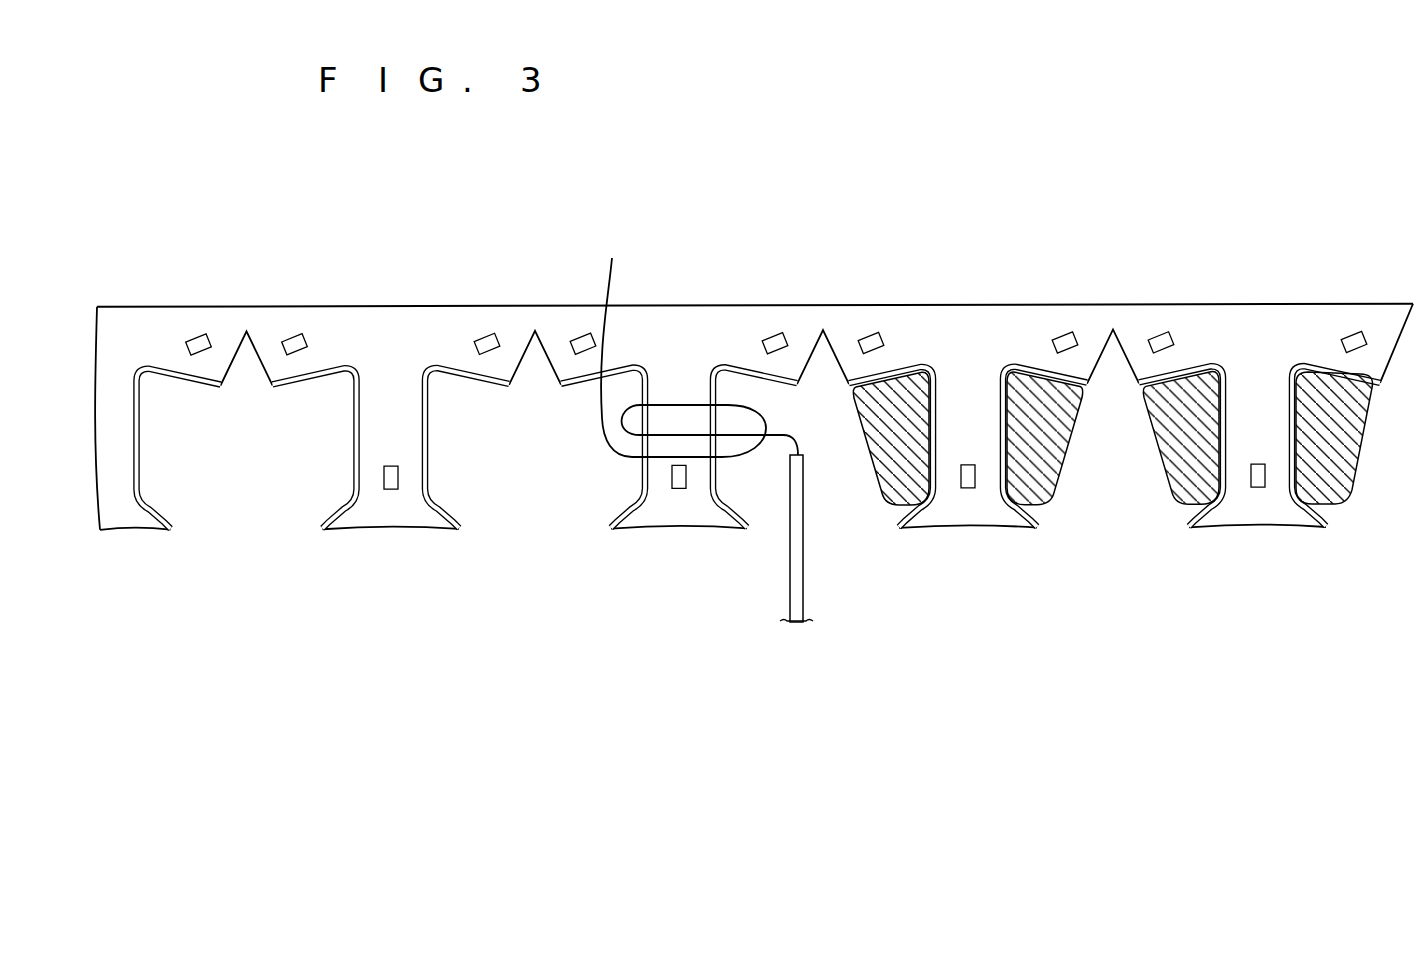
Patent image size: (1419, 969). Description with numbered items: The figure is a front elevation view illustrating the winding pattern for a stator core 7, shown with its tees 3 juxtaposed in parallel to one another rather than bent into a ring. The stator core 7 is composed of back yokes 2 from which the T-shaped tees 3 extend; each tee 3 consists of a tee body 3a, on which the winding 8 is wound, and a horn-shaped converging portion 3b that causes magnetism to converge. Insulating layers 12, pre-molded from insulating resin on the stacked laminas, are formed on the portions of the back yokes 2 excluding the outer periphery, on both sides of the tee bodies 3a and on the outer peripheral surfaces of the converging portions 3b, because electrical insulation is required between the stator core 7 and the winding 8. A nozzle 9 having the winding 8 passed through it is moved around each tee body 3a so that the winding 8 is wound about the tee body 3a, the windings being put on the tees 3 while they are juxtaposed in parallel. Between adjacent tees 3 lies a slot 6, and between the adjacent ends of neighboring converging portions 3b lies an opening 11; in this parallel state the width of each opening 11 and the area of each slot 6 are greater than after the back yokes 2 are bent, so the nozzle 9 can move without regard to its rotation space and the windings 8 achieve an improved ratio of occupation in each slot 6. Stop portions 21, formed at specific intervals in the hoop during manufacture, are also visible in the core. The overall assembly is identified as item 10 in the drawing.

The back yoke 2 is at (1319, 330).
The tee 3 is at (1202, 598).
The tee body 3a is at (1270, 453).
The converging portion 3b is at (1008, 517).
The slot 6 is at (1117, 455).
The stator core 7 is at (1290, 305).
The winding 8 is at (678, 435).
The nozzle 9 is at (788, 588).
The stator 10 is at (793, 290).
The opening 11 is at (1085, 513).
The insulating layer 12 is at (1032, 395).
The stop portion 21 is at (200, 333).